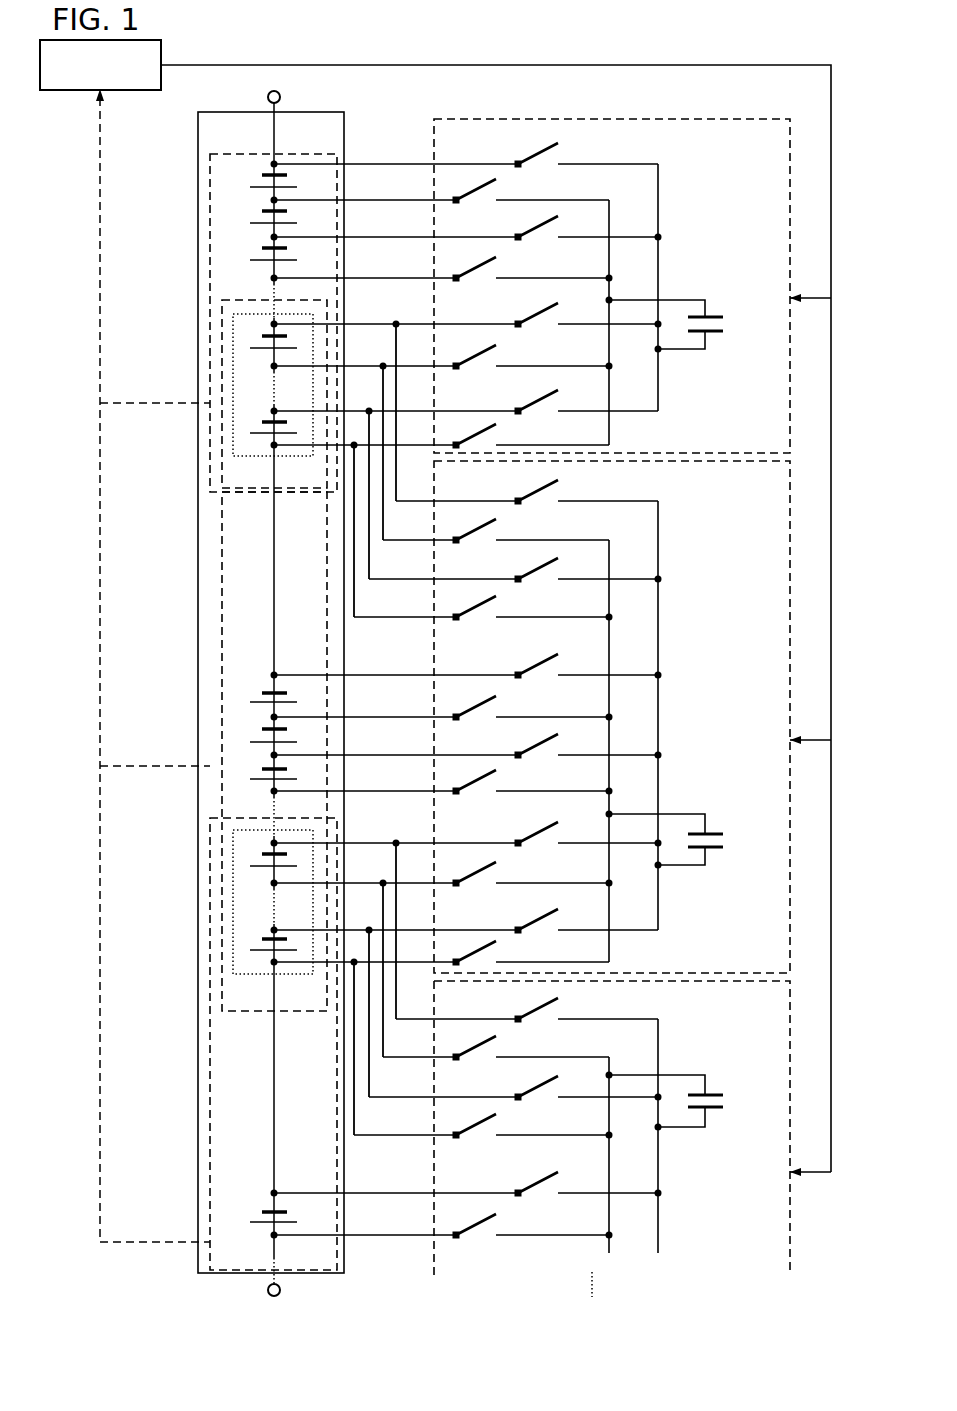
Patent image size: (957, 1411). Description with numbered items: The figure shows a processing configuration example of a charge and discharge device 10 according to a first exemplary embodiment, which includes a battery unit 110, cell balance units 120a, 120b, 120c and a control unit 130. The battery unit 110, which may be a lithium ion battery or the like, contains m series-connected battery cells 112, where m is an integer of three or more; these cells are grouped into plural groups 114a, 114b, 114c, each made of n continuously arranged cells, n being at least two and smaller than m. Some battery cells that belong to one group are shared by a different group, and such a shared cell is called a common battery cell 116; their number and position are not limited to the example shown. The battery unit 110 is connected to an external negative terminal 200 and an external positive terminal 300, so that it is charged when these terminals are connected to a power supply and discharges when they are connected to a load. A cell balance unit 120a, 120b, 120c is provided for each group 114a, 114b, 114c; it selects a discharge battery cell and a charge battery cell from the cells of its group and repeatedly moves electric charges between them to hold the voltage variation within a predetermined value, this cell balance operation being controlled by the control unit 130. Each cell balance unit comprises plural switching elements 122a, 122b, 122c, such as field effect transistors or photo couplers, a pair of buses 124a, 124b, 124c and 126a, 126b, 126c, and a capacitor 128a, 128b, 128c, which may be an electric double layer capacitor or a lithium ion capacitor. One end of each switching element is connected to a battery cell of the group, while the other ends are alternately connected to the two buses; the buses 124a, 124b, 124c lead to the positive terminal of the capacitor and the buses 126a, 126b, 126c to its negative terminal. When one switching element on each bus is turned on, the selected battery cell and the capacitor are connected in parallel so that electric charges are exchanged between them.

The charge and discharge device 10 is at (863, 35).
The battery unit 110 is at (312, 112).
The battery cell 112 is at (250, 180).
The group 114a is at (216, 318).
The group 114b is at (216, 598).
The group 114c is at (210, 1133).
The common battery cell 116 is at (240, 425).
The cell balance unit 120a is at (791, 201).
The cell balance unit 120b is at (791, 571).
The cell balance unit 120c is at (791, 1038).
The switching element 122a is at (557, 155).
The switching element 122b is at (557, 492).
The switching element 122c is at (557, 1007).
The bus 124a is at (609, 228).
The bus 124b is at (609, 565).
The bus 124c is at (609, 1182).
The bus 126a is at (658, 190).
The bus 126b is at (658, 527).
The bus 126c is at (658, 1048).
The capacitor 128a is at (723, 316).
The capacitor 128b is at (723, 832).
The capacitor 128c is at (723, 1094).
The control unit 130 is at (163, 52).
The external negative terminal 200 is at (268, 93).
The external positive terminal 300 is at (268, 1290).